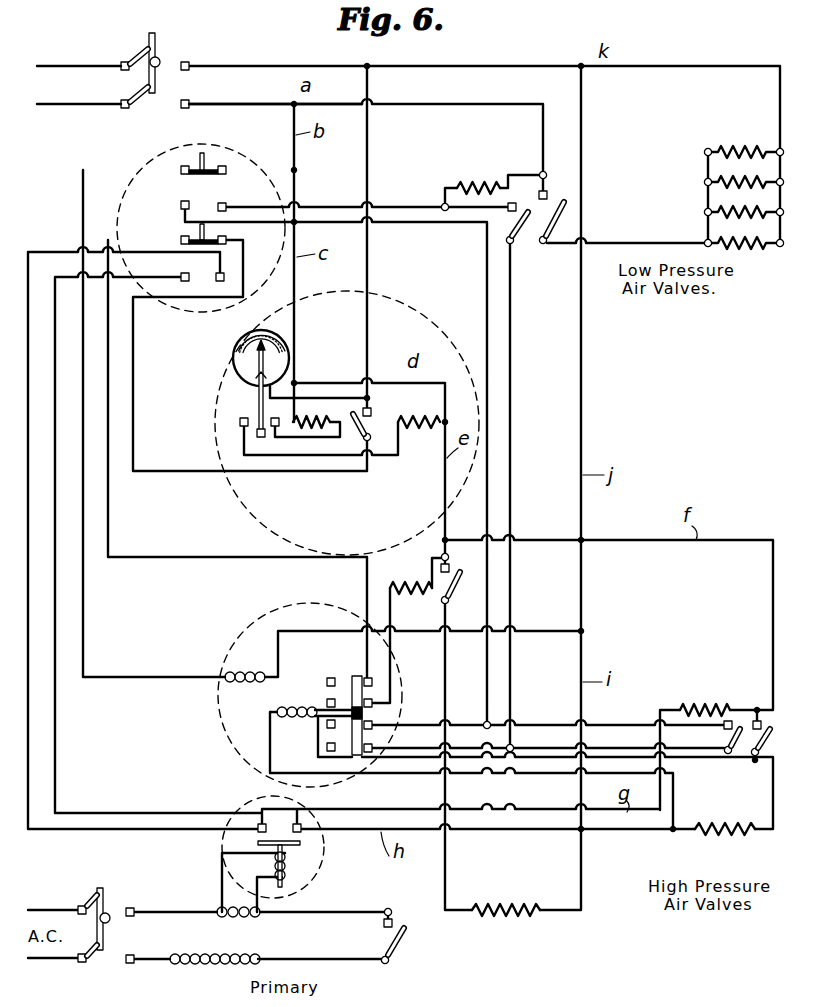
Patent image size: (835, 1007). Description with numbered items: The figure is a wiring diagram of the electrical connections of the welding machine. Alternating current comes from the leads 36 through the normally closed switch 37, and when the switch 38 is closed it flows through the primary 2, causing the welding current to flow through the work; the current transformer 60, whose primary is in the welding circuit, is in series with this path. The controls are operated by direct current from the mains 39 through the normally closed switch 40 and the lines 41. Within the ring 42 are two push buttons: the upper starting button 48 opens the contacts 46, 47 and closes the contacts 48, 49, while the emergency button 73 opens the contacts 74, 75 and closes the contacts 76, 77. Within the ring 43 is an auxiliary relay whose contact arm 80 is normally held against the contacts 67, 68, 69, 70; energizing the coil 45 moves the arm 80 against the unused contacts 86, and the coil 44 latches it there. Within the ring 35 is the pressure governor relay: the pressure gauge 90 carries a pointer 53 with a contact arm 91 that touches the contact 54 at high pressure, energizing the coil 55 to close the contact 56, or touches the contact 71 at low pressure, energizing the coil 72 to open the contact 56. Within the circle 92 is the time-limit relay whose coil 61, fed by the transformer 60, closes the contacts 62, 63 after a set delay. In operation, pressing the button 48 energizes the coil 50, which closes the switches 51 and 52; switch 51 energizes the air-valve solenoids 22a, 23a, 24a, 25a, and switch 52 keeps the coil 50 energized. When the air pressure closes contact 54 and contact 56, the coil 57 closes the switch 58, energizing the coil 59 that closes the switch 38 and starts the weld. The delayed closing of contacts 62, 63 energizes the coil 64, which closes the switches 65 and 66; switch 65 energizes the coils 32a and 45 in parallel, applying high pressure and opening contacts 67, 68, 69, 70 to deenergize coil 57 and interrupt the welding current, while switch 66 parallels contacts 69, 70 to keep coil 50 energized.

The primary 2 is at (206, 964).
The solenoid 22a is at (708, 150).
The solenoid 23a is at (708, 180).
The solenoid 24a is at (708, 210).
The solenoid 25a is at (708, 241).
The coil 32a is at (704, 834).
The pressure governor relay 35 is at (430, 322).
The leads 36 is at (62, 960).
The normally closed switch 37 is at (104, 952).
The switch 38 is at (406, 950).
The mains 39 is at (98, 52).
The normally closed switch 40 is at (160, 44).
The lines 41 is at (418, 106).
The ring 42 is at (166, 153).
The ring 43 is at (246, 616).
The coil 44 is at (252, 676).
The coil 45 is at (276, 711).
The contacts 46 is at (183, 174).
The contacts 47 is at (226, 167).
The push button 48 is at (181, 205).
The contacts 49 is at (226, 205).
The coil 50 is at (472, 186).
The switch 51 is at (552, 200).
The switch 52 is at (514, 246).
The pointer 53 is at (284, 352).
The contact 54 is at (238, 422).
The coil 55 is at (420, 420).
The contact 56 is at (372, 442).
The coil 57 is at (406, 586).
The switch 58 is at (441, 601).
The coil 59 is at (498, 906).
The current transformer 60 is at (222, 916).
The coil 61 is at (286, 860).
The contacts 62 is at (302, 830).
The contacts 63 is at (258, 831).
The coil 64 is at (690, 708).
The switch 65 is at (755, 756).
The switch 66 is at (724, 754).
The contacts 67 is at (365, 680).
The contacts 68 is at (352, 702).
The contacts 69 is at (374, 724).
The contacts 70 is at (372, 756).
The contact 71 is at (280, 430).
The coil 72 is at (310, 420).
The button 73 is at (203, 223).
The contacts 74 is at (183, 238).
The contacts 75 is at (226, 240).
The contacts 76 is at (182, 277).
The contacts 77 is at (226, 276).
The contact arm 80 is at (352, 740).
The contacts 86 is at (330, 680).
The pressure gauge 90 is at (283, 338).
The contact arm 91 is at (257, 416).
The circle 92 is at (252, 806).